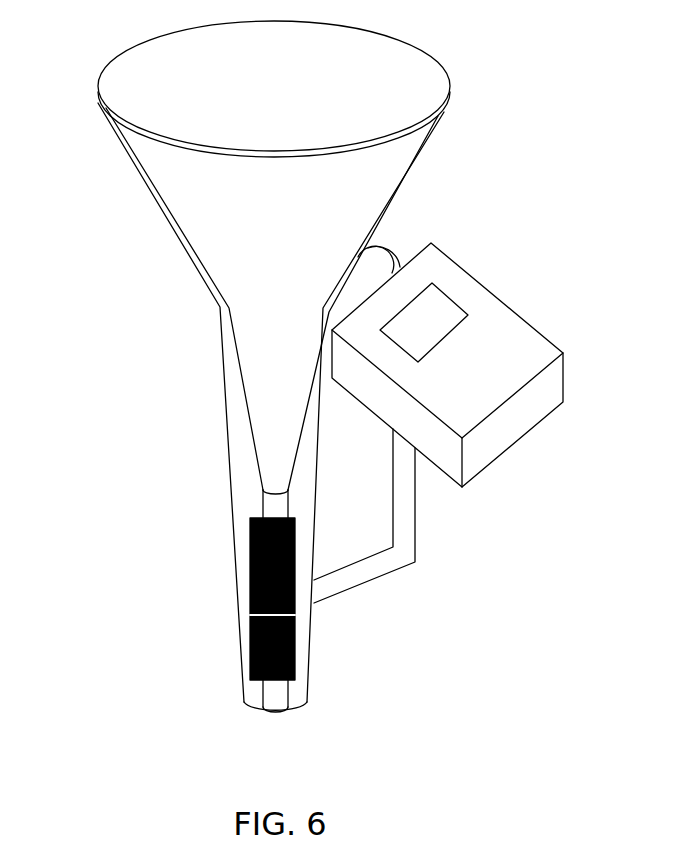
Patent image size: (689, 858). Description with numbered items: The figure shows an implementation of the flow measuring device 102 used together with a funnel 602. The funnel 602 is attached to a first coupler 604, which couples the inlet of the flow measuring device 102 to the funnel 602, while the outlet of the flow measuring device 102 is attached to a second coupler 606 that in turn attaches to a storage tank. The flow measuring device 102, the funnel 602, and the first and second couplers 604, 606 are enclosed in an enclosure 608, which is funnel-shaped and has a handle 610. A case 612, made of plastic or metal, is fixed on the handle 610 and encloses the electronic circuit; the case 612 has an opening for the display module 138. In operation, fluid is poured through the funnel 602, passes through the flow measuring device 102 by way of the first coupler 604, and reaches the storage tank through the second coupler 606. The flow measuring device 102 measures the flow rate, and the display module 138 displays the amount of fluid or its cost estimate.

The funnel 602 is at (102, 70).
The enclosure 608 is at (226, 403).
The first coupler 604 is at (262, 505).
The second coupler 606 is at (287, 693).
The flow measuring device 102 is at (250, 640).
The case 612 is at (467, 270).
The display module 138 is at (442, 343).
The handle 610 is at (415, 562).